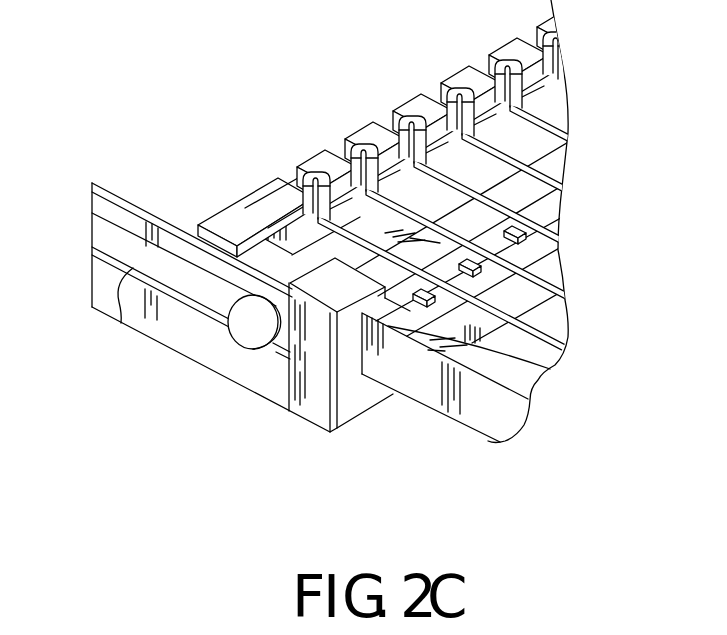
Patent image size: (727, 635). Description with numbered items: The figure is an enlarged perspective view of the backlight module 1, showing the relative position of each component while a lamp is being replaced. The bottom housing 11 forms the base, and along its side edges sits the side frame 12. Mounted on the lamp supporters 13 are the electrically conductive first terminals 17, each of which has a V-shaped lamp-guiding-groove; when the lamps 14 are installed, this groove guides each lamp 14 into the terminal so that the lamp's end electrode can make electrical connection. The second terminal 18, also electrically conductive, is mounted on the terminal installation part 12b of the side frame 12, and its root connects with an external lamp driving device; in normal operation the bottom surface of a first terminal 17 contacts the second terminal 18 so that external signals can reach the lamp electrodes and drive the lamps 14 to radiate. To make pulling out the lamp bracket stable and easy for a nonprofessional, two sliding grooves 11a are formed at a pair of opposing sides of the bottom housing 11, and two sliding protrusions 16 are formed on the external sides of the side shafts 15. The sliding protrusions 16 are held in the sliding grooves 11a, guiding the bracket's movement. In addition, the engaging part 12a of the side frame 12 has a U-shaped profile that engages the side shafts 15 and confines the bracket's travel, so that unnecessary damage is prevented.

The backlight module 1 is at (136, 111).
The bottom housing 11 is at (283, 391).
The sliding grooves 11a is at (123, 313).
The side frame 12 is at (363, 380).
The engaging part 12a is at (348, 367).
The terminal installation part 12b is at (537, 360).
The lamp supporters 13 is at (243, 207).
The lamps 14 is at (538, 135).
The side shafts 15 is at (477, 410).
The sliding protrusions 16 is at (248, 327).
The first terminals 17 is at (316, 180).
The second terminal 18 is at (552, 224).